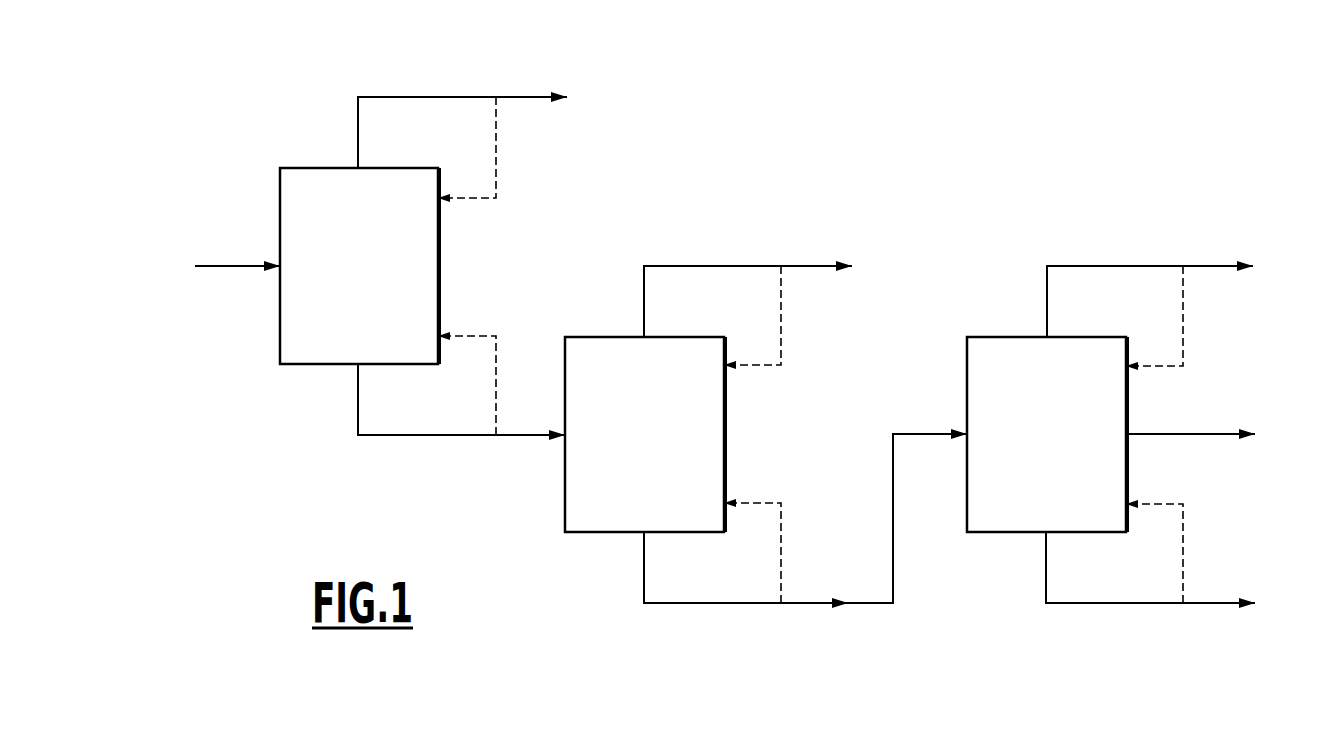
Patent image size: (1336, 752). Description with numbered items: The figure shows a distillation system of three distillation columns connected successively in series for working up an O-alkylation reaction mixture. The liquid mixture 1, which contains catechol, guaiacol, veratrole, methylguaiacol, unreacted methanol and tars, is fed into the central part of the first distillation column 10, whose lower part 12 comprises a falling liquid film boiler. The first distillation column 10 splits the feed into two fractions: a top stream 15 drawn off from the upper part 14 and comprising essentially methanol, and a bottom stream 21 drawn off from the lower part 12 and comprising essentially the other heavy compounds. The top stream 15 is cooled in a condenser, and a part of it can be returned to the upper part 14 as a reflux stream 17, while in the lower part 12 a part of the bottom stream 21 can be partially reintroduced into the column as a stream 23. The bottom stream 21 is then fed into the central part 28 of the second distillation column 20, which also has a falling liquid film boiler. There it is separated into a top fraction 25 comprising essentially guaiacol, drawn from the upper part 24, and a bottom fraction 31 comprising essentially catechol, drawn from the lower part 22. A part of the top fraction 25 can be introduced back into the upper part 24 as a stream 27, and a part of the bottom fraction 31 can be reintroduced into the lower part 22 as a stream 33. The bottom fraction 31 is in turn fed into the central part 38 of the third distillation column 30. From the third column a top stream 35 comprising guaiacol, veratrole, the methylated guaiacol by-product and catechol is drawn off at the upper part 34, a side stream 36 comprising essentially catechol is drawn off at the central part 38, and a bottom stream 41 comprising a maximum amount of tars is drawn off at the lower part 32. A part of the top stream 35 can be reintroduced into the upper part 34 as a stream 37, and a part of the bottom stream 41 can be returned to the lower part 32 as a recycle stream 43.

The liquid mixture 1 is at (213, 262).
The first distillation column 10 is at (360, 266).
The lower part of first distillation column 12 is at (300, 380).
The upper part of first distillation column 14 is at (330, 148).
The top stream of first column 15 is at (530, 93).
The reflux stream to first column 17 is at (496, 168).
The second distillation column 20 is at (645, 434).
The bottom stream of first column 21 is at (508, 440).
The lower part of second distillation column 22 is at (587, 547).
The bottom recycle stream of first column 23 is at (496, 392).
The upper part of second distillation column 24 is at (635, 325).
The top fraction of second column 25 is at (818, 263).
The reflux stream to second column 27 is at (781, 335).
The central part of second distillation column 28 is at (545, 457).
The third distillation column 30 is at (1047, 434).
The bottom fraction of second column 31 is at (818, 606).
The lower part of third distillation column 32 is at (988, 548).
The bottom recycle stream 33 is at (781, 533).
The upper part of third distillation column 34 is at (1018, 318).
The top stream of third column 35 is at (1220, 263).
The side stream 36 is at (1220, 432).
The reflux stream to third column 37 is at (1183, 335).
The central part of third distillation column 38 is at (1138, 422).
The bottom stream of third column 41 is at (1208, 607).
The third lower recycle line 43 is at (1183, 533).